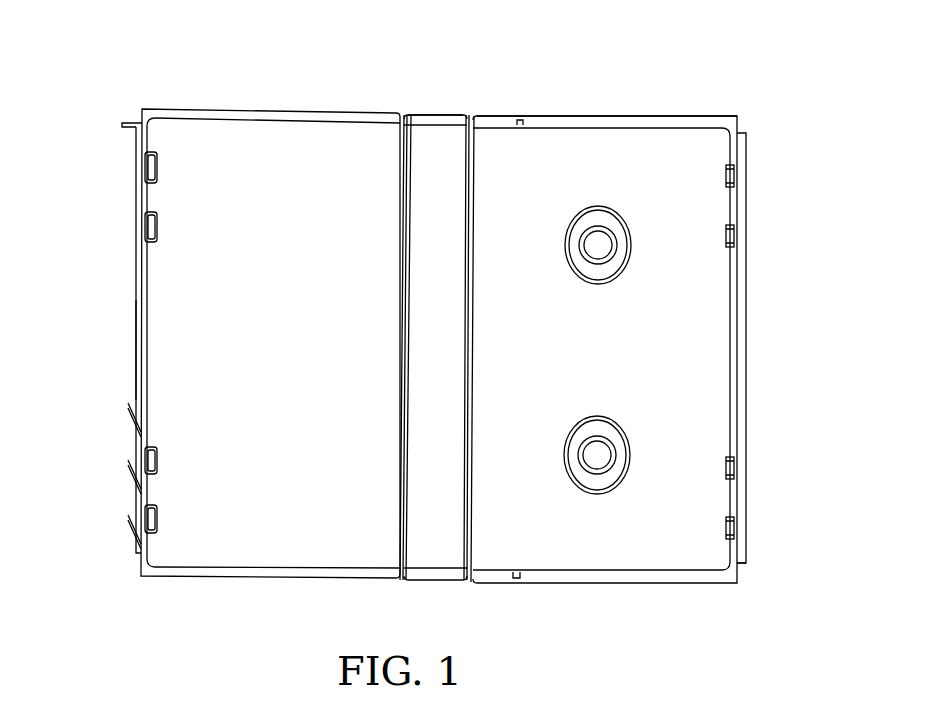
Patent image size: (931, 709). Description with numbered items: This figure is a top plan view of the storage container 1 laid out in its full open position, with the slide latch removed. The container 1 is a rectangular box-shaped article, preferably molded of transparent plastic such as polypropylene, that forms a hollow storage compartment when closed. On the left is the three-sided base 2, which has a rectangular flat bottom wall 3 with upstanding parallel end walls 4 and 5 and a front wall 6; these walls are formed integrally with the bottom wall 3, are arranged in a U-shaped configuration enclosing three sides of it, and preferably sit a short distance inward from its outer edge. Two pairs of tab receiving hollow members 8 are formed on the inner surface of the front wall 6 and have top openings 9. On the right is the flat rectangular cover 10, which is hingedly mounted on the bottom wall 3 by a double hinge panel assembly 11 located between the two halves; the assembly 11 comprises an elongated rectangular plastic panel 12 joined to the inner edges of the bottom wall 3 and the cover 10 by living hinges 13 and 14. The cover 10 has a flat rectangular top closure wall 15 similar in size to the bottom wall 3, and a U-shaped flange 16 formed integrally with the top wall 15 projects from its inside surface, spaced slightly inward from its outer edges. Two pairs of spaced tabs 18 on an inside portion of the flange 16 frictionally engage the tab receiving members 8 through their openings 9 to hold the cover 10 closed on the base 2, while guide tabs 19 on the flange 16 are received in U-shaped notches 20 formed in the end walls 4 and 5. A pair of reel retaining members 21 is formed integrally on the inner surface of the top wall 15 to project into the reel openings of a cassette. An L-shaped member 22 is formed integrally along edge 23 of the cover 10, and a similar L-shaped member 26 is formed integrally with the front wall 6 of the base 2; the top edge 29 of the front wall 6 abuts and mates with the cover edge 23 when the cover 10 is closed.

The storage container 1 is at (214, 594).
The base 2 is at (151, 574).
The bottom wall 3 is at (298, 560).
The end wall 4 is at (270, 567).
The end wall 5 is at (245, 122).
The front wall 6 is at (135, 310).
The tab receiving hollow member 8 is at (157, 228).
The top opening 9 is at (156, 218).
The cover 10 is at (620, 586).
The double hinge panel assembly 11 is at (438, 112).
The panel 12 is at (430, 552).
The living hinge 13 is at (400, 333).
The living hinge 14 is at (472, 335).
The top closure wall 15 is at (707, 408).
The U-shaped flange 16 is at (618, 127).
The tab 18 is at (727, 178).
The guide tab 19 is at (517, 580).
The U-shaped notch 20 is at (353, 580).
The reel retaining member 21 is at (597, 285).
The L-shaped member 22 is at (740, 532).
The edge 23 is at (733, 335).
The L-shaped member 26 is at (133, 252).
The top edge 29 is at (137, 353).